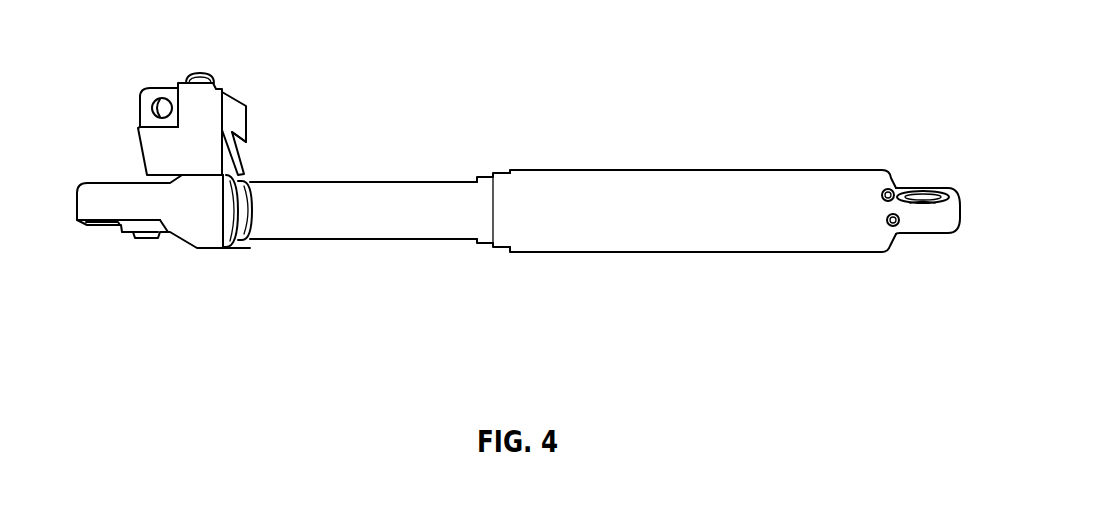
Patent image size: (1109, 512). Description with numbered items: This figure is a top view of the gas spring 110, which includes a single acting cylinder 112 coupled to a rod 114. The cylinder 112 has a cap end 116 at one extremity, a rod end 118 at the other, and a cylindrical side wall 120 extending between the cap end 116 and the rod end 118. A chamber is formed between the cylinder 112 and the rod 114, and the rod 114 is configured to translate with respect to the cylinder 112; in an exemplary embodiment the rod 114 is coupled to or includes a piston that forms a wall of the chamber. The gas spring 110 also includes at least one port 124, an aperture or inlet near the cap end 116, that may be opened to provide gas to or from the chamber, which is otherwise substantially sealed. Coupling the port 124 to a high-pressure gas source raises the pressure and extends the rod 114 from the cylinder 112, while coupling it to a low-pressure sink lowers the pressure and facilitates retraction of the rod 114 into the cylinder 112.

The gas spring 110 is at (648, 126).
The cylinder 112 is at (743, 215).
The rod 114 is at (343, 220).
The cap end 116 is at (905, 255).
The rod end 118 is at (502, 277).
The side wall 120 is at (702, 265).
The port 124 is at (895, 187).